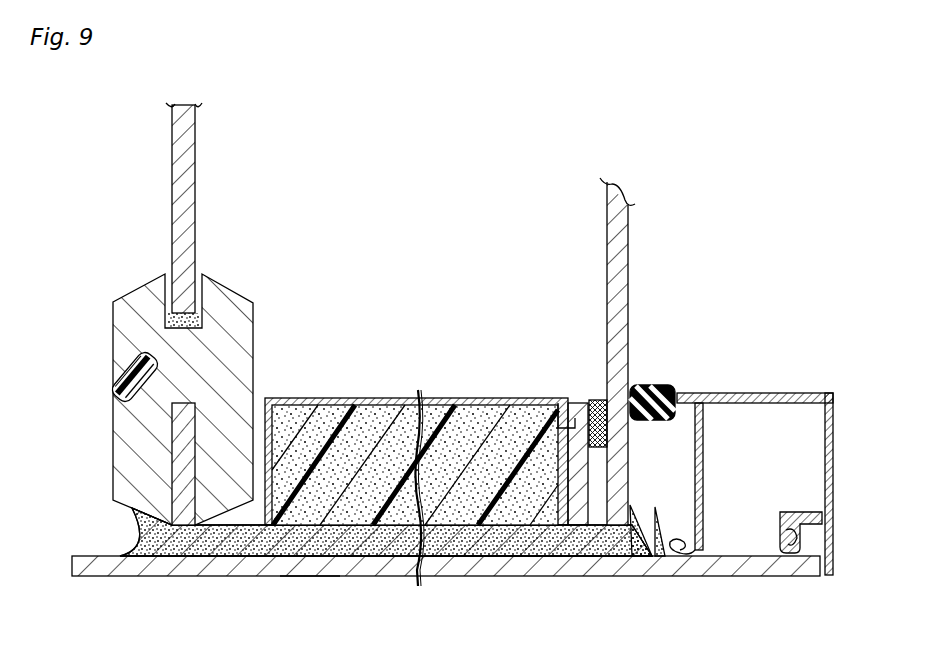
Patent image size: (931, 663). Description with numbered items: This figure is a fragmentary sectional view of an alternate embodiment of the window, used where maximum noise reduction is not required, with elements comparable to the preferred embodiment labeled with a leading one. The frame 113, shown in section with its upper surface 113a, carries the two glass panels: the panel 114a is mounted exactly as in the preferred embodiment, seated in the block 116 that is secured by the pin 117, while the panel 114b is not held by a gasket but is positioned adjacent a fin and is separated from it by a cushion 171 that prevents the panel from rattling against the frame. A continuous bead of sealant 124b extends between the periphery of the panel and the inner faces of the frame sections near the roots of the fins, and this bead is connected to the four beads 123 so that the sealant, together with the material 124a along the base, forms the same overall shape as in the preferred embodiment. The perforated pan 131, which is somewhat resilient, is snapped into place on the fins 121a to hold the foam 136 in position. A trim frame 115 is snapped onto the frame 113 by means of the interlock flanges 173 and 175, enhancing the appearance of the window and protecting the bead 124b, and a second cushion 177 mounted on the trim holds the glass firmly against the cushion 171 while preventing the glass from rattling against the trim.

The frame 113 is at (628, 578).
The upper surface of base plate 113a is at (473, 564).
The panel 114a is at (197, 148).
The panel 114b is at (628, 278).
The trim frame 115 is at (745, 393).
The block 116 is at (240, 333).
The pin 117 is at (116, 376).
The fin 121a is at (185, 470).
The bead 123 is at (307, 577).
The bonding material 124a is at (138, 536).
The bead of sealant 124b is at (652, 540).
The perforated pan 131 is at (333, 400).
The foam 136 is at (378, 418).
The cushion 171 is at (598, 392).
The interlock flange 173 is at (667, 556).
The interlock flange 175 is at (800, 526).
The second cushion 177 is at (640, 388).